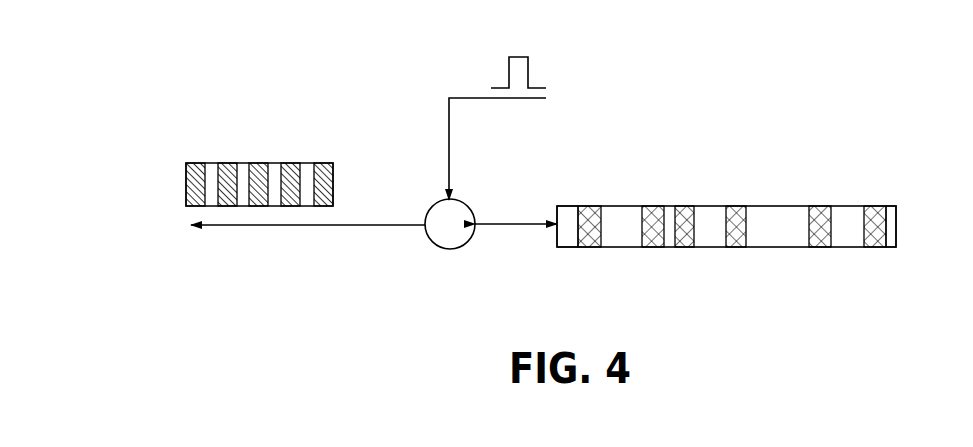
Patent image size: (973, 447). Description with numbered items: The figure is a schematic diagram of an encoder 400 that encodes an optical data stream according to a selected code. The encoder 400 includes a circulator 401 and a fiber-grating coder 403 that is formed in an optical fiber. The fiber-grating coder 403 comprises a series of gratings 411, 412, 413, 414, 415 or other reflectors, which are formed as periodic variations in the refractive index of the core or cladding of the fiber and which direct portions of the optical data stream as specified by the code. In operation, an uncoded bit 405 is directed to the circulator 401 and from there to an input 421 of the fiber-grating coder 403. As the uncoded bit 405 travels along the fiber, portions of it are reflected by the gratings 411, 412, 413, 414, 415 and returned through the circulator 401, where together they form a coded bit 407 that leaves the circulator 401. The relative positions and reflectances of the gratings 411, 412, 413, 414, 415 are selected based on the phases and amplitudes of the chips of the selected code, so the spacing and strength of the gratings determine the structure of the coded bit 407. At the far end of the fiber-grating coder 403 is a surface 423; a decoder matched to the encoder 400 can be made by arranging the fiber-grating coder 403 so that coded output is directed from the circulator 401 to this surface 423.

The encoder 400 is at (694, 44).
The circulator 401 is at (425, 206).
The fiber-grating coder 403 is at (758, 171).
The uncoded bit 405 is at (528, 65).
The coded bit 407 is at (245, 163).
The grating 411 is at (588, 247).
The grating 412 is at (651, 247).
The grating 413 is at (681, 247).
The grating 414 is at (738, 247).
The grating 415 is at (818, 247).
The input 421 is at (556, 206).
The surface 423 is at (897, 215).